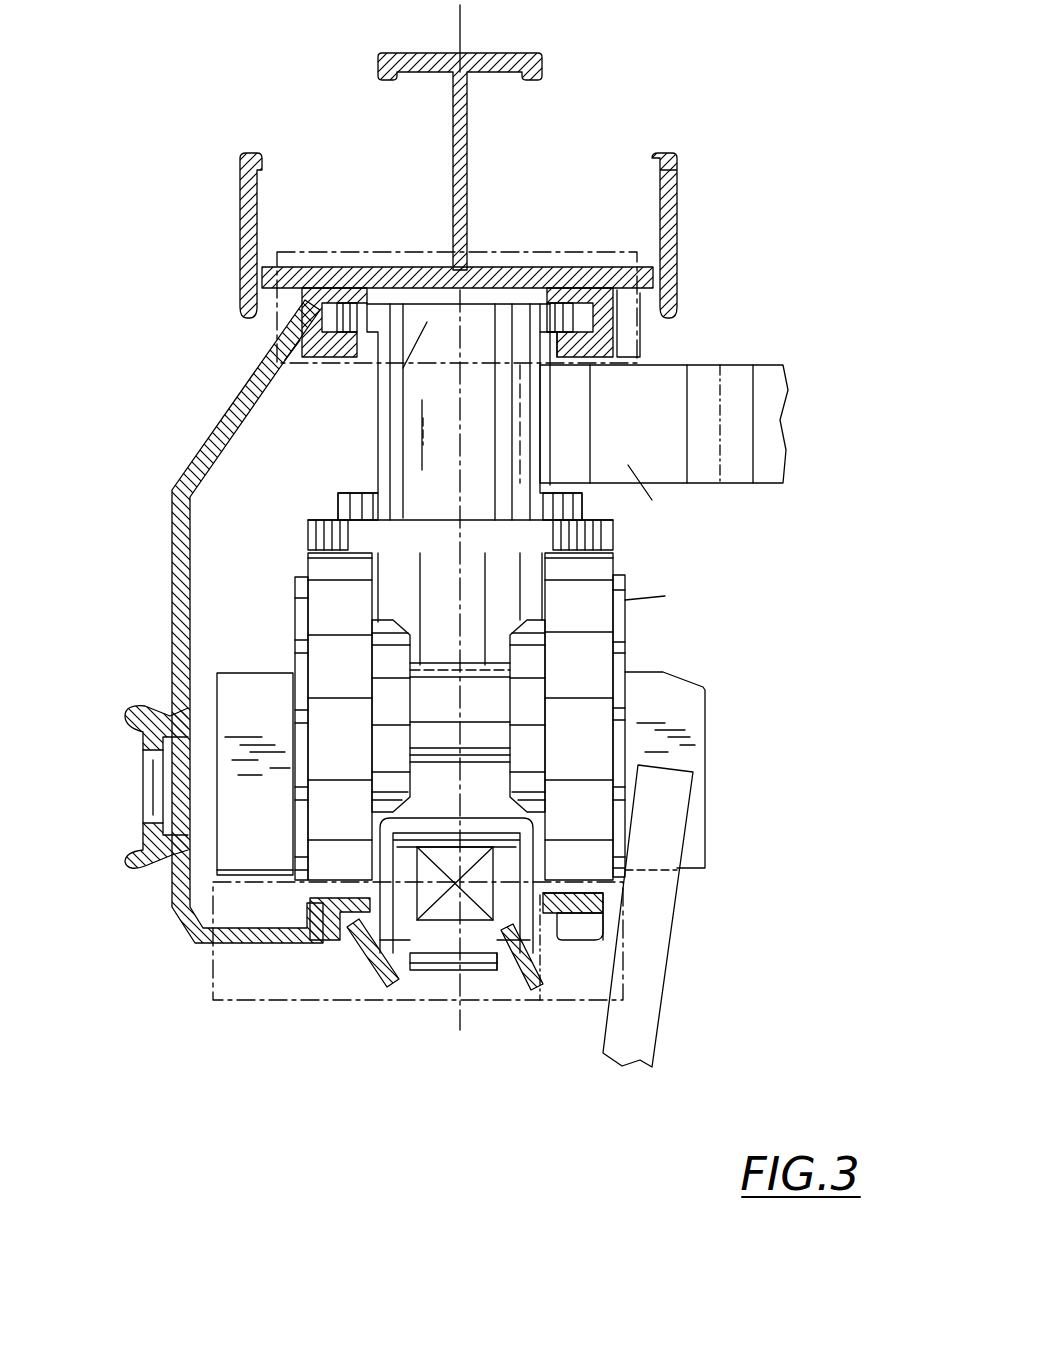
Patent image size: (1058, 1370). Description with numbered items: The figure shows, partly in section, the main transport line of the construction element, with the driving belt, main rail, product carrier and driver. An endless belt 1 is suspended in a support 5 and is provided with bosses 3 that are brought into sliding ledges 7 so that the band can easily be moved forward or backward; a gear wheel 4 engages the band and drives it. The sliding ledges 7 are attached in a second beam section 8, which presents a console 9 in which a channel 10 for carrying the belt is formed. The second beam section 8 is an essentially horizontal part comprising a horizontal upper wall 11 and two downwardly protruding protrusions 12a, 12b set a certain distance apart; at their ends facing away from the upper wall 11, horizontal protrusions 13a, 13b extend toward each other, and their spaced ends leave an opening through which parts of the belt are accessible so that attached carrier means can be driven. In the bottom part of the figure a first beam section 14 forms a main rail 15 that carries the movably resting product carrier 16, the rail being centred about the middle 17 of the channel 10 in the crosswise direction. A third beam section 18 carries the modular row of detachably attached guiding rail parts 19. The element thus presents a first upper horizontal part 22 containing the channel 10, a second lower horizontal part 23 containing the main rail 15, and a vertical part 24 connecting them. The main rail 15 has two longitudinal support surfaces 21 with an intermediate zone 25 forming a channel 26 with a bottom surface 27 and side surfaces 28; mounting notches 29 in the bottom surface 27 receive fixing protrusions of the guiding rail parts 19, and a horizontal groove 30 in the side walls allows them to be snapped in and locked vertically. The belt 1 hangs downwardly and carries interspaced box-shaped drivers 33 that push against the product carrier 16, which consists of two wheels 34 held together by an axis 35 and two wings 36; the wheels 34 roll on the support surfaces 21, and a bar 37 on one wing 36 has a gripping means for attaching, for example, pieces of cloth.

The belt 1 is at (430, 490).
The bosses 3 is at (340, 258).
The gear wheel 4 is at (630, 467).
The support 5 is at (462, 158).
The sliding ledges 7 is at (340, 292).
The second beam section 8 is at (578, 362).
The console 9 is at (283, 338).
The channel 10 is at (427, 322).
The horizontal upper wall 11 is at (542, 277).
The downwardly protruding protrusion 12a is at (290, 333).
The downwardly protruding protrusion 12b is at (675, 292).
The horizontal protrusion 13a is at (300, 358).
The horizontal protrusion 13b is at (593, 365).
The first beam section 14 is at (642, 354).
The main rail 15 is at (340, 890).
The product carrier 16 is at (665, 596).
The middle 17 is at (460, 455).
The third beam section 18 is at (427, 985).
The guiding rail parts 19 is at (490, 822).
The support surfaces 21 is at (305, 880).
The first upper essentially horizontal part 22 is at (690, 297).
The second lower essentially horizontal part 23 is at (612, 918).
The vertical part 24 is at (172, 683).
The intermediate zone 25 is at (372, 963).
The channel 26 is at (495, 932).
The bottom surface 27 is at (418, 972).
The side surfaces 28 is at (380, 935).
The mounting notches 29 is at (465, 960).
The groove 30 is at (555, 970).
The drivers 33 is at (407, 530).
The wheels 34 is at (307, 562).
The axis 35 is at (443, 677).
The wings 36 is at (235, 710).
The bar 37 is at (643, 1030).